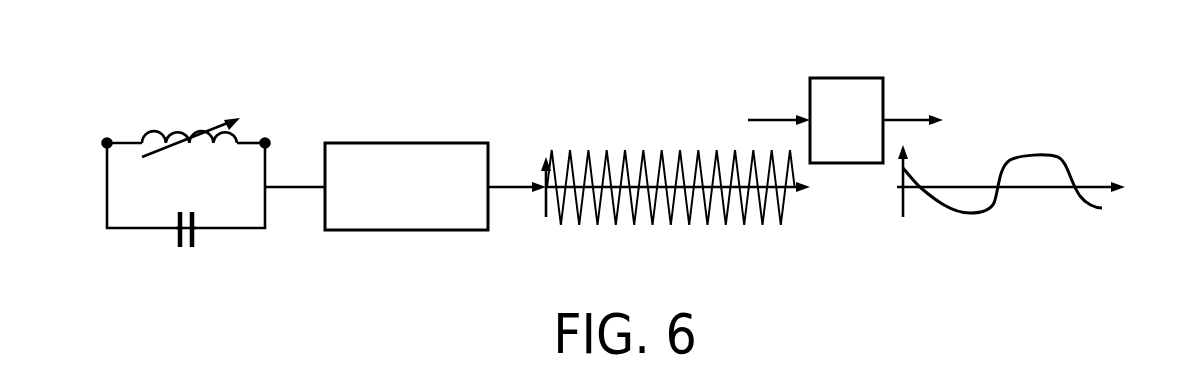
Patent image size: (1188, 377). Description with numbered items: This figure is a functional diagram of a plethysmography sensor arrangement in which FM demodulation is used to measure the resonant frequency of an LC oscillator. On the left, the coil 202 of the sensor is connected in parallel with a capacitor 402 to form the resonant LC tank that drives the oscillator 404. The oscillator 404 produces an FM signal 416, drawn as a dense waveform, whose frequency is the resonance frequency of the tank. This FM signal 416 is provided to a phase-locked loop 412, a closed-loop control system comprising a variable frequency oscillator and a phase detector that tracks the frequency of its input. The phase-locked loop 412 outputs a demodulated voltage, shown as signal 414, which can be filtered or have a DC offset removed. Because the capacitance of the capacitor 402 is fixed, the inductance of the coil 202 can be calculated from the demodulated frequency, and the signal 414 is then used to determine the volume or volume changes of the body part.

The coil 202 is at (181, 138).
The capacitor 402 is at (193, 233).
The oscillator 404 is at (406, 143).
The FM signal 416 is at (626, 160).
The phase-locked loop 412 is at (847, 78).
The signal 414 is at (1062, 158).